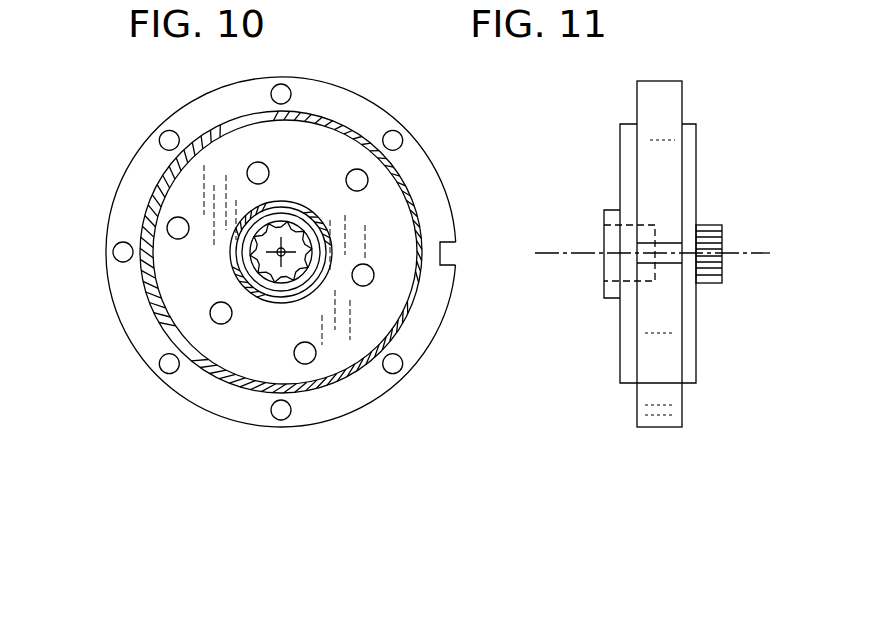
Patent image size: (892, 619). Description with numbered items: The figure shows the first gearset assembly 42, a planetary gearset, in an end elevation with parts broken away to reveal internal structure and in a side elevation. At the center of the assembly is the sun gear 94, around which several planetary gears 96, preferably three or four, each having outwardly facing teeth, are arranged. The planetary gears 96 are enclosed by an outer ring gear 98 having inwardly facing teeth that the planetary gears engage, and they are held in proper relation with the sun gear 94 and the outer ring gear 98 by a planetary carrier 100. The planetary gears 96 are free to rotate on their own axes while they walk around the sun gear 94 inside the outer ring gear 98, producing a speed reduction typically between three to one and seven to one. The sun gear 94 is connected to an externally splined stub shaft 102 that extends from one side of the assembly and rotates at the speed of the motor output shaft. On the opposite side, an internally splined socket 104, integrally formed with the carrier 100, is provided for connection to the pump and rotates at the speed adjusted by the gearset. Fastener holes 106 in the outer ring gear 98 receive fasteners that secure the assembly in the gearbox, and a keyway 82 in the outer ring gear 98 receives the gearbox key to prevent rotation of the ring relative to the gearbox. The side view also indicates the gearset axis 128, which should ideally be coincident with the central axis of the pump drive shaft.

In FIG. 10, the first gearset assembly 42 is at (132, 160).
In FIG. 11, the first gearset assembly 42 is at (635, 107).
In FIG. 10, the keyway 82 is at (452, 264).
In FIG. 10, the sun gear 94 is at (312, 217).
In FIG. 10, the planetary gears 96 is at (220, 132).
In FIG. 10, the outer ring gear 98 is at (443, 178).
In FIG. 10, the planetary carrier 100 is at (282, 139).
In FIG. 11, the planetary carrier 100 is at (620, 160).
In FIG. 10, the stub shaft 102 is at (277, 274).
In FIG. 11, the stub shaft 102 is at (708, 227).
In FIG. 11, the socket 104 is at (606, 229).
In FIG. 10, the fastener holes 106 is at (290, 87).
In FIG. 11, the gearset axis 128 is at (762, 258).